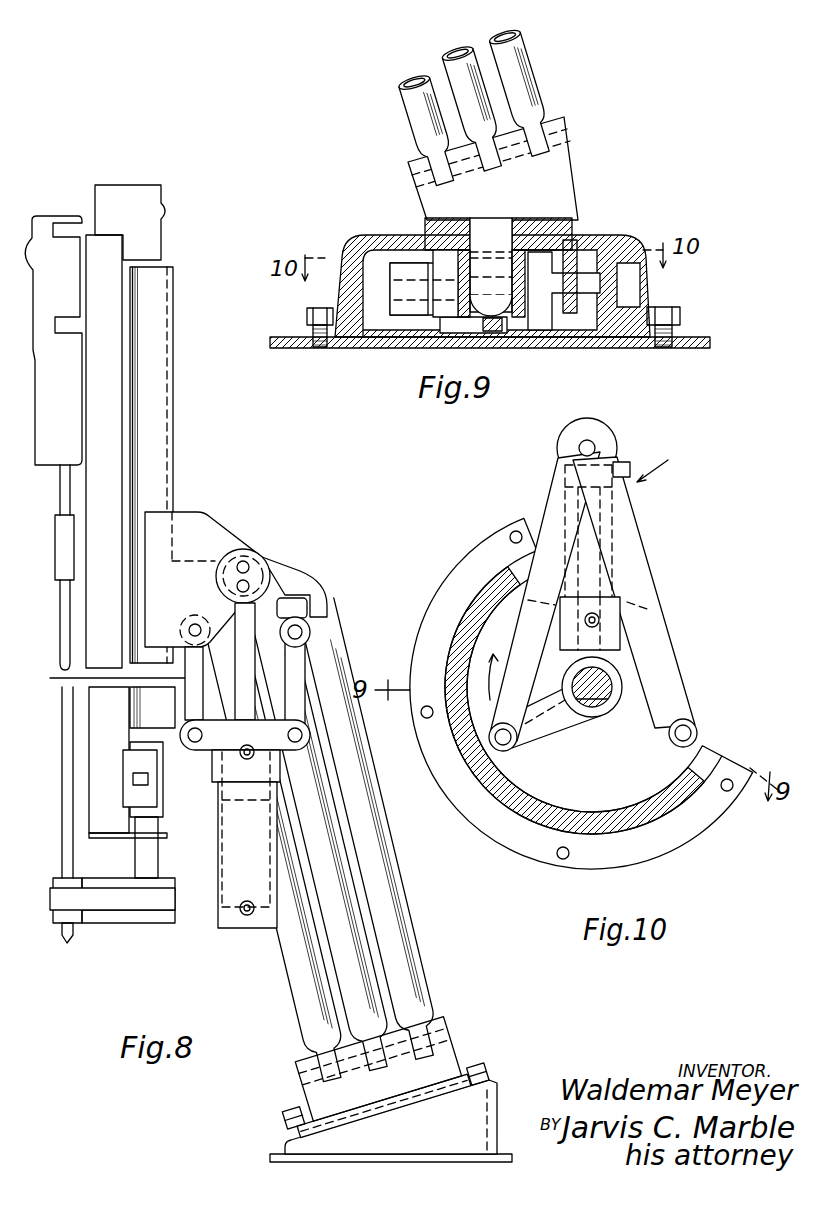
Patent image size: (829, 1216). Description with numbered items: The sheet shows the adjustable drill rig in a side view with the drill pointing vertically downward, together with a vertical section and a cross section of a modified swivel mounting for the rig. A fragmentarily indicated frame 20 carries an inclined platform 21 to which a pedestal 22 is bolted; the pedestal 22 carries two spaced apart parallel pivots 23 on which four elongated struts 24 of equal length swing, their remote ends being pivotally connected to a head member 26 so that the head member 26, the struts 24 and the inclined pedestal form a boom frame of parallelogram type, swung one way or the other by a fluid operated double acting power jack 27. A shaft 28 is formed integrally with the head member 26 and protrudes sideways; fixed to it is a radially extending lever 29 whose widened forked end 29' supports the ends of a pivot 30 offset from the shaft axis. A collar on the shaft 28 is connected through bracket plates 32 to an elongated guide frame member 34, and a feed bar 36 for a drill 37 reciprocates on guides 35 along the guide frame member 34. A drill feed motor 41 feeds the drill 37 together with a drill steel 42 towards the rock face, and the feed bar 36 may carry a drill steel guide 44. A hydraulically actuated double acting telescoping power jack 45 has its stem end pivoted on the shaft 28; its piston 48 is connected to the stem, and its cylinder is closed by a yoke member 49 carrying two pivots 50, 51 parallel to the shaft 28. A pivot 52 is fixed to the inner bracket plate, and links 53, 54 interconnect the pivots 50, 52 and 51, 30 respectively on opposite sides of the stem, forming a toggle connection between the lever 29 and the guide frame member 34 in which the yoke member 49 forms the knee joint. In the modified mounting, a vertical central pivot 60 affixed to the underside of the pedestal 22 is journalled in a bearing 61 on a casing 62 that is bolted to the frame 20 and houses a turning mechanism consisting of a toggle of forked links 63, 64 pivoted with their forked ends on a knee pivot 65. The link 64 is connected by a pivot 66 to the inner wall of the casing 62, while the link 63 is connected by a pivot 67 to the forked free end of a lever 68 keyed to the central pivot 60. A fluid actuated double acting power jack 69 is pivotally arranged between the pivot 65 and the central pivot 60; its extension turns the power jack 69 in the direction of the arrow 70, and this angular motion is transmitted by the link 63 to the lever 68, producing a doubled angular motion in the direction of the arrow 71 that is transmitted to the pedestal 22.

In FIG. 8, the frame 20 is at (350, 1157).
In FIG. 9, the frame 20 is at (680, 337).
In FIG. 8, the inclined platform 21 is at (455, 1097).
In FIG. 8, the pedestal 22 is at (440, 1060).
In FIG. 9, the pedestal 22 is at (555, 185).
In FIG. 8, the pivots 23 is at (445, 1027).
In FIG. 9, the pivots 23 is at (556, 137).
In FIG. 8, the struts 24 is at (403, 962).
In FIG. 9, the struts 24 is at (420, 108).
In FIG. 8, the head member 26 is at (322, 594).
In FIG. 8, the power jack 27 is at (350, 978).
In FIG. 9, the power jack 27 is at (460, 65).
In FIG. 8, the shaft 28 is at (257, 568).
In FIG. 8, the lever 29 is at (317, 561).
In FIG. 8, the forked end 29' is at (334, 604).
In FIG. 8, the pivot 30 is at (310, 632).
In FIG. 8, the bracket plate 32 is at (200, 533).
In FIG. 8, the guide frame member 34 is at (163, 452).
In FIG. 8, the guides 35 is at (133, 377).
In FIG. 8, the feed bar 36 is at (103, 487).
In FIG. 8, the drill 37 is at (72, 410).
In FIG. 8, the drill feed motor 41 is at (147, 202).
In FIG. 8, the drill steel 42 is at (63, 607).
In FIG. 8, the drill steel guide 44 is at (148, 900).
In FIG. 8, the telescoping power jack 45 is at (237, 929).
In FIG. 8, the piston 48 is at (232, 790).
In FIG. 8, the yoke member 49 is at (215, 745).
In FIG. 8, the pivot 50 is at (196, 748).
In FIG. 8, the pivot 51 is at (312, 735).
In FIG. 8, the pivot 52 is at (180, 630).
In FIG. 8, the link 53 is at (105, 681).
In FIG. 8, the link 54 is at (293, 678).
In FIG. 9, the central pivot 60 is at (460, 218).
In FIG. 10, the central pivot 60 is at (605, 708).
In FIG. 9, the bearing 61 is at (563, 235).
In FIG. 9, the casing 62 is at (632, 295).
In FIG. 10, the casing 62 is at (547, 818).
In FIG. 9, the link 63 is at (397, 280).
In FIG. 10, the link 63 is at (537, 637).
In FIG. 9, the link 64 is at (568, 295).
In FIG. 10, the link 64 is at (662, 660).
In FIG. 9, the pivot 65 is at (503, 337).
In FIG. 10, the pivot 65 is at (590, 445).
In FIG. 9, the pivot 66 is at (578, 243).
In FIG. 10, the pivot 66 is at (690, 732).
In FIG. 9, the pivot 67 is at (398, 323).
In FIG. 10, the pivot 67 is at (507, 742).
In FIG. 9, the lever 68 is at (440, 285).
In FIG. 10, the lever 68 is at (563, 713).
In FIG. 10, the power jack 69 is at (592, 570).
In FIG. 10, the arrow 70 is at (655, 459).
In FIG. 10, the arrow 71 is at (488, 675).